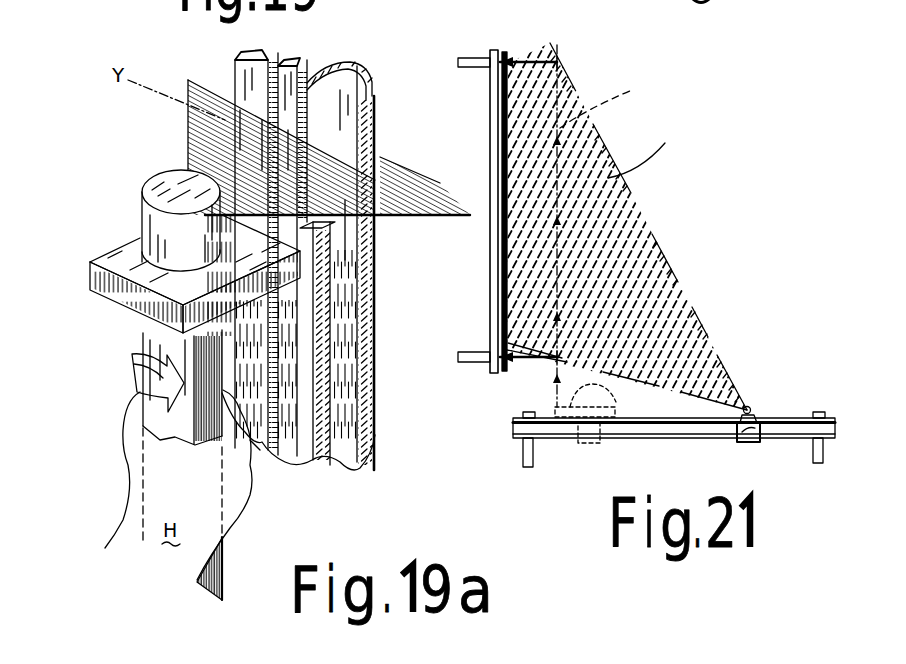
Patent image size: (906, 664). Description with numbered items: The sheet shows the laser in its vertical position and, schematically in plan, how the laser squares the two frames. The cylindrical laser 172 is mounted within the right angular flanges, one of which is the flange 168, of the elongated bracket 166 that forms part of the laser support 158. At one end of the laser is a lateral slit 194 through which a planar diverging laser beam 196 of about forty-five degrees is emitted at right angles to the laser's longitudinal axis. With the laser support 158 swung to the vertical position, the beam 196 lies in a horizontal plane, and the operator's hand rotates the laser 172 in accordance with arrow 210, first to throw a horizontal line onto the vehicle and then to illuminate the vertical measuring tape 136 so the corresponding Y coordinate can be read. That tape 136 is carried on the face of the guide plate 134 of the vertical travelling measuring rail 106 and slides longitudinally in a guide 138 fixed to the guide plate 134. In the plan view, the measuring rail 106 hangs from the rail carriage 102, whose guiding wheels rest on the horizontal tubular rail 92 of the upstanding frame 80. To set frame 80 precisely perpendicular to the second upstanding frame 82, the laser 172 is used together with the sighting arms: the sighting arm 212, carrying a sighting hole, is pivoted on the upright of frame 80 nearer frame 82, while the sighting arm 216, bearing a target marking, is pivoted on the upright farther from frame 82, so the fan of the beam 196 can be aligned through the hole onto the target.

In FIG. 21, the upstanding frame 80 is at (482, 234).
In FIG. 21, the upstanding frame 82 is at (642, 443).
In FIG. 21, the horizontal tubular rail 92 is at (785, 439).
In FIG. 21, the rail carriage 102 is at (750, 441).
In FIG. 19A, the vertical travelling measuring rail 106 is at (375, 425).
In FIG. 19A, the guide plate 134 is at (373, 132).
In FIG. 19A, the measuring tape 136 is at (270, 60).
In FIG. 19A, the guide 138 is at (308, 94).
In FIG. 19A, the laser support 158 is at (285, 476).
In FIG. 19A, the elongated bracket 166 is at (323, 337).
In FIG. 19A, the right angular flange 168 is at (120, 290).
In FIG. 19A, the cylindrical laser 172 is at (137, 336).
In FIG. 21, the cylindrical laser 172 is at (612, 396).
In FIG. 19A, the lateral slit 194 is at (247, 220).
In FIG. 19A, the planar diverging laser beam 196 is at (407, 177).
In FIG. 21, the planar diverging laser beam 196 is at (627, 126).
In FIG. 19A, the arrow 210 is at (140, 388).
In FIG. 21, the sighting arm 212 is at (545, 358).
In FIG. 21, the sighting arm 216 is at (538, 54).